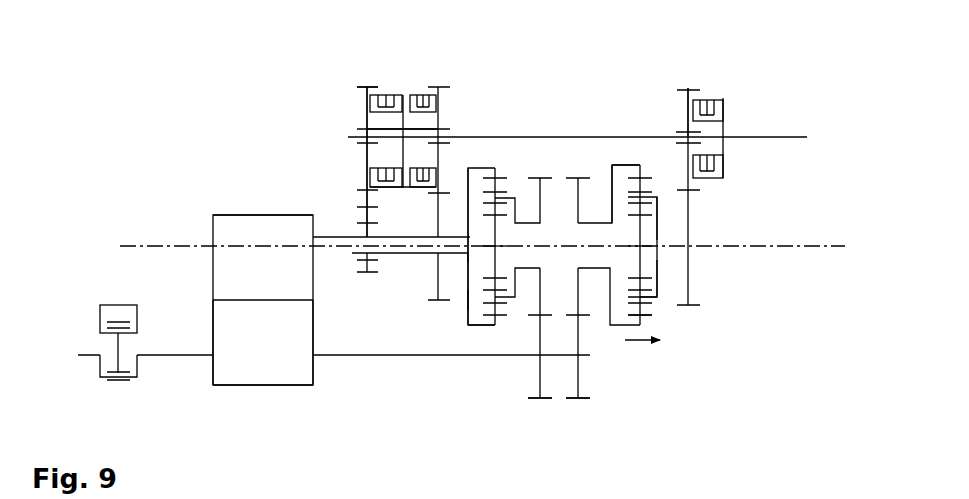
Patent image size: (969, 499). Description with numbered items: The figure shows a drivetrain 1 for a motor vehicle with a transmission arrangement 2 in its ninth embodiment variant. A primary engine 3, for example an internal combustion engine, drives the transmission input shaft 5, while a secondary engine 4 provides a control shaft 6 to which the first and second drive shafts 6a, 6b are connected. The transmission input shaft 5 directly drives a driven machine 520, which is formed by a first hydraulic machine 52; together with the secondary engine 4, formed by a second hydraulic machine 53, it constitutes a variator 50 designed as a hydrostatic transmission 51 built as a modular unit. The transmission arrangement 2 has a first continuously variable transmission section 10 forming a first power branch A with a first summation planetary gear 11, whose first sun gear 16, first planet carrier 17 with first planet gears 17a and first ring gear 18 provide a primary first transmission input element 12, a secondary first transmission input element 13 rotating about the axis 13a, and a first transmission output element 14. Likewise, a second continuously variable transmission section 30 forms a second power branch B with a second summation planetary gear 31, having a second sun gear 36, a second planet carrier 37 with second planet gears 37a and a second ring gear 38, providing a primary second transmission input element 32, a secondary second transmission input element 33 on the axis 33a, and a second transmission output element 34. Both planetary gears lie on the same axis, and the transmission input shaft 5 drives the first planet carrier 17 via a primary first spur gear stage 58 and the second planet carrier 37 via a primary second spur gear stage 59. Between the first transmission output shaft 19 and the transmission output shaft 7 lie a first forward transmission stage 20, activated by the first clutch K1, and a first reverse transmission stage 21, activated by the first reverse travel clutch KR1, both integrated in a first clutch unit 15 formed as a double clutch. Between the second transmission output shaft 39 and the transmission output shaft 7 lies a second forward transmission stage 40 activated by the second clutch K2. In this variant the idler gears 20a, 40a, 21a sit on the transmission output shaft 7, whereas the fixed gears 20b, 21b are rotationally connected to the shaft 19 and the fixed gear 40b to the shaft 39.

The drivetrain 1 is at (186, 412).
The transmission arrangement 2 is at (722, 313).
The primary engine 3 is at (78, 328).
The secondary engine 4 is at (247, 208).
The transmission input shaft 5 is at (185, 353).
The control shaft 6 is at (326, 248).
The first drive shaft 6a is at (492, 250).
The second drive shaft 6b is at (613, 250).
The transmission output shaft 7 is at (763, 138).
The first continuously variable transmission section 10 is at (475, 335).
The first summation planetary gear 11 is at (503, 335).
The primary first transmission input element 12 is at (542, 298).
The secondary first transmission input element 13 is at (470, 262).
The axis of rotation 13a is at (125, 246).
The first transmission output element 14 is at (468, 200).
The first clutch unit 15 is at (362, 82).
The first sun gear 16 is at (498, 240).
The first planet carrier 17 is at (511, 197).
The first planet gears 17a is at (488, 300).
The first ring gear 18 is at (489, 330).
The first transmission output shaft 19 is at (330, 237).
The first forward transmission stage 20 is at (443, 99).
The idler gear 20a is at (438, 162).
The fixed gear 20b is at (438, 227).
The first reverse transmission stage 21 is at (366, 286).
The idler gear 21a is at (367, 118).
The fixed gear 21b is at (376, 262).
The second continuously variable transmission section 30 is at (608, 158).
The second summation planetary gear 31 is at (625, 158).
The primary second transmission input element 32 is at (582, 303).
The secondary second transmission input element 33 is at (598, 244).
The axis of rotation 33a is at (840, 246).
The second transmission output element 34 is at (660, 283).
The second sun gear 36 is at (640, 240).
The second planet carrier 37 is at (658, 300).
The second planet gears 37a is at (647, 310).
The second ring gear 38 is at (640, 160).
The second transmission output shaft 39 is at (660, 272).
The second forward transmission stage 40 is at (698, 80).
The idler gear 40a is at (699, 97).
The fixed gear 40b is at (687, 217).
The variator 50 is at (207, 230).
The hydrostatic transmission 51 is at (247, 398).
The first hydraulic machine 52 is at (276, 367).
The second hydraulic machine 53 is at (276, 283).
The primary first spur gear stage 58 is at (537, 403).
The primary second spur gear stage 59 is at (589, 403).
The driven machine 520 is at (286, 370).
The first power branch A is at (467, 159).
The second power branch B is at (641, 343).
The first clutch K1 is at (412, 88).
The second clutch K2 is at (725, 116).
The first reverse travel clutch KR1 is at (381, 88).